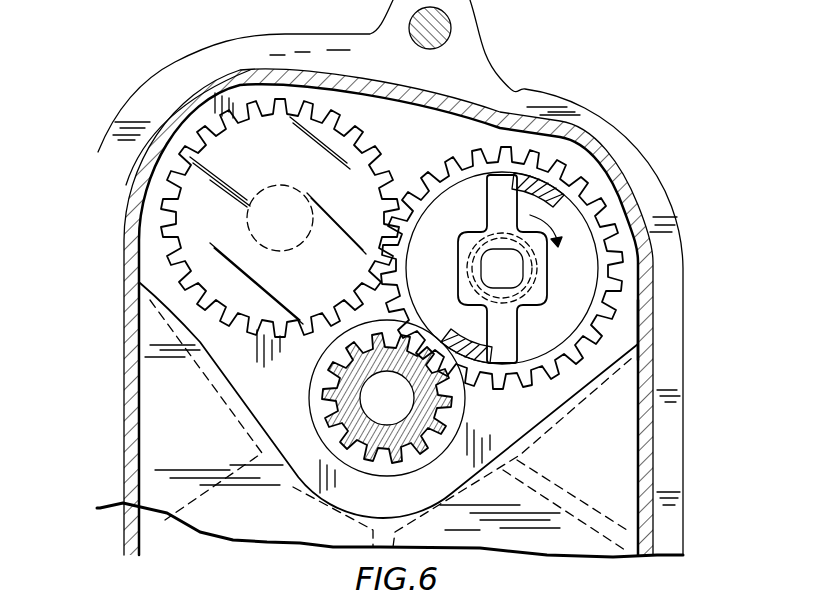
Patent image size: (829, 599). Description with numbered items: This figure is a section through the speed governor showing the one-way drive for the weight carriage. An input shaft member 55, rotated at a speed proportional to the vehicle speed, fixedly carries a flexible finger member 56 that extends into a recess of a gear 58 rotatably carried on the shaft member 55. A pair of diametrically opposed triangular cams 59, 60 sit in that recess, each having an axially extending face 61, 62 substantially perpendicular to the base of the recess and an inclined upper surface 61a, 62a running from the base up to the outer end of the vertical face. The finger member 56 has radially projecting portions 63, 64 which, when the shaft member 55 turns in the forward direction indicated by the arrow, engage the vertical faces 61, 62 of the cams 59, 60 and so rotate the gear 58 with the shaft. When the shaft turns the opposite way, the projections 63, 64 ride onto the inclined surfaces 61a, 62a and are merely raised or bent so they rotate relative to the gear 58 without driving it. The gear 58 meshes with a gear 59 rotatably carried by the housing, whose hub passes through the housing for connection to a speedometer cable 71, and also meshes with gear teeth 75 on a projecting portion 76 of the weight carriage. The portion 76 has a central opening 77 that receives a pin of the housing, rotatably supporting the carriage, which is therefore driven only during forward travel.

The input shaft member 55 is at (515, 267).
The flexible finger member 56 is at (512, 215).
The gear 58 is at (617, 147).
The cam 59 is at (212, 139).
The cam 60 is at (602, 118).
The axially extending face 61 is at (492, 356).
The inclined upper surface 61a is at (447, 342).
The axially extending face 62 is at (510, 176).
The inclined upper surface 62a is at (623, 178).
The radially projecting portion 63 is at (497, 203).
The radially projecting portion 64 is at (505, 358).
The speedometer cable 71 is at (275, 222).
The gear teeth 75 is at (322, 395).
The projecting portion 76 is at (418, 417).
The central opening 77 is at (367, 412).